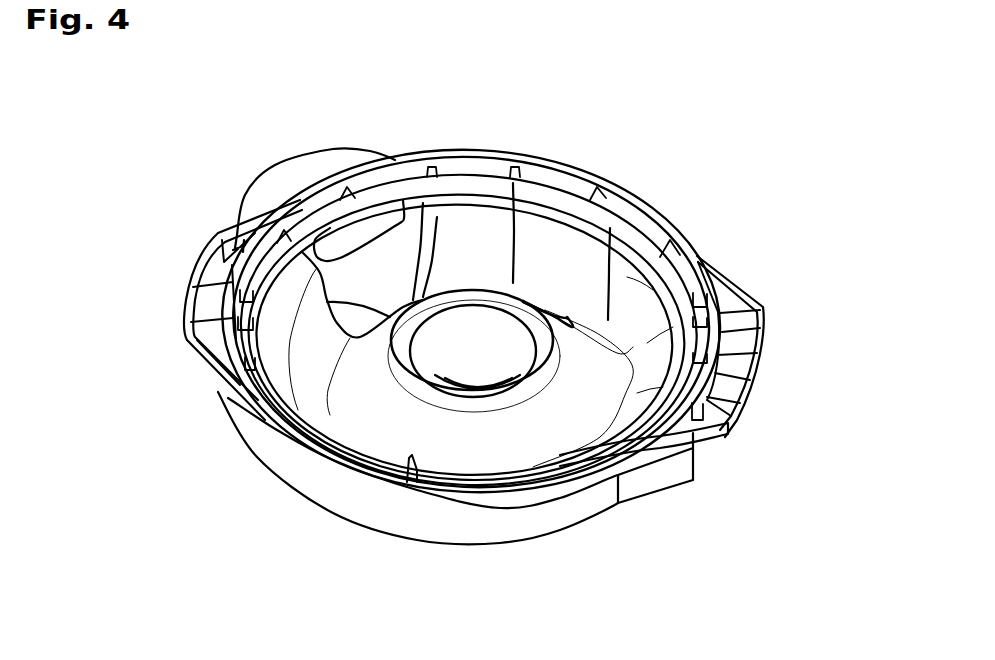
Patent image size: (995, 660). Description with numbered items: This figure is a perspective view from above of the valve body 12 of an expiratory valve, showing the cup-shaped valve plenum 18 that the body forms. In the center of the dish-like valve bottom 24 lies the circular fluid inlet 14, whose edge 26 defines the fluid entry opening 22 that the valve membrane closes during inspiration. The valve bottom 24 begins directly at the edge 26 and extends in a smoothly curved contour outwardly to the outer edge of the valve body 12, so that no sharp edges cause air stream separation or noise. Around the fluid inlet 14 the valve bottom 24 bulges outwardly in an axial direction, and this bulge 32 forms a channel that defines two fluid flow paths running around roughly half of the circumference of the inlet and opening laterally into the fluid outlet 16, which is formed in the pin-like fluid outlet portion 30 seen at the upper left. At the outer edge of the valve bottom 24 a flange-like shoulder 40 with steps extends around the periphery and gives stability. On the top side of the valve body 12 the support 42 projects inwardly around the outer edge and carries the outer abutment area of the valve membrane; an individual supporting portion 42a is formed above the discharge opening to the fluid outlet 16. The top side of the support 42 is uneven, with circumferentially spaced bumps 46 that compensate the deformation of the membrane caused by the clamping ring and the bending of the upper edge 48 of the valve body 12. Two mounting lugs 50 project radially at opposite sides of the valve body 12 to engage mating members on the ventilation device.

The valve body 12 is at (812, 226).
The fluid inlet 14 is at (477, 387).
The fluid outlet 16 is at (307, 175).
The valve plenum 18 is at (607, 300).
The fluid entry opening 22 is at (442, 358).
The valve bottom 24 is at (515, 290).
The edge 26 is at (537, 367).
The fluid outlet portion 30 is at (268, 185).
The bulge 32 is at (316, 386).
The flange-like shoulder 40 is at (284, 471).
The support 42 is at (607, 235).
The individual supporting portion 42a is at (372, 228).
The bumps 46 is at (272, 337).
The upper edge 48 is at (412, 482).
The mounting lugs 50 is at (228, 272).